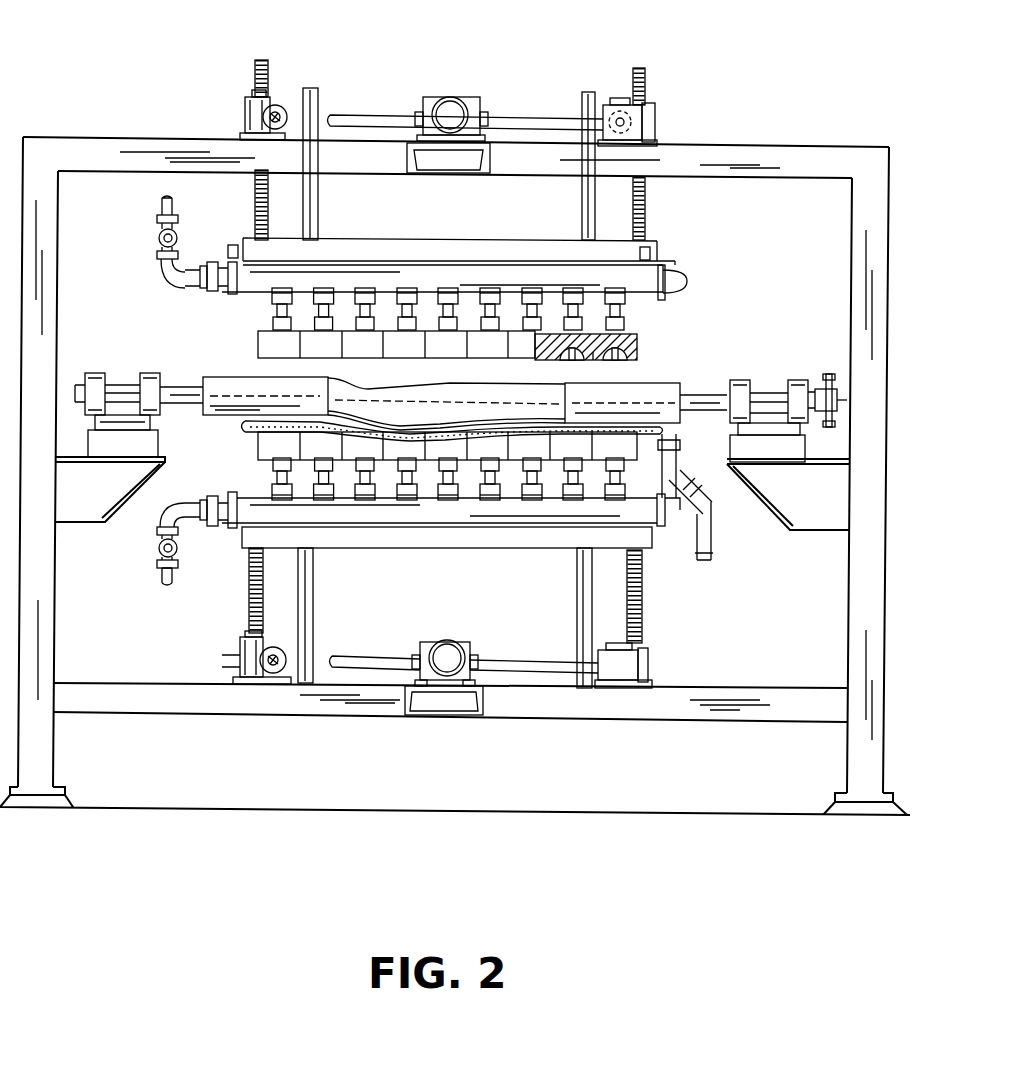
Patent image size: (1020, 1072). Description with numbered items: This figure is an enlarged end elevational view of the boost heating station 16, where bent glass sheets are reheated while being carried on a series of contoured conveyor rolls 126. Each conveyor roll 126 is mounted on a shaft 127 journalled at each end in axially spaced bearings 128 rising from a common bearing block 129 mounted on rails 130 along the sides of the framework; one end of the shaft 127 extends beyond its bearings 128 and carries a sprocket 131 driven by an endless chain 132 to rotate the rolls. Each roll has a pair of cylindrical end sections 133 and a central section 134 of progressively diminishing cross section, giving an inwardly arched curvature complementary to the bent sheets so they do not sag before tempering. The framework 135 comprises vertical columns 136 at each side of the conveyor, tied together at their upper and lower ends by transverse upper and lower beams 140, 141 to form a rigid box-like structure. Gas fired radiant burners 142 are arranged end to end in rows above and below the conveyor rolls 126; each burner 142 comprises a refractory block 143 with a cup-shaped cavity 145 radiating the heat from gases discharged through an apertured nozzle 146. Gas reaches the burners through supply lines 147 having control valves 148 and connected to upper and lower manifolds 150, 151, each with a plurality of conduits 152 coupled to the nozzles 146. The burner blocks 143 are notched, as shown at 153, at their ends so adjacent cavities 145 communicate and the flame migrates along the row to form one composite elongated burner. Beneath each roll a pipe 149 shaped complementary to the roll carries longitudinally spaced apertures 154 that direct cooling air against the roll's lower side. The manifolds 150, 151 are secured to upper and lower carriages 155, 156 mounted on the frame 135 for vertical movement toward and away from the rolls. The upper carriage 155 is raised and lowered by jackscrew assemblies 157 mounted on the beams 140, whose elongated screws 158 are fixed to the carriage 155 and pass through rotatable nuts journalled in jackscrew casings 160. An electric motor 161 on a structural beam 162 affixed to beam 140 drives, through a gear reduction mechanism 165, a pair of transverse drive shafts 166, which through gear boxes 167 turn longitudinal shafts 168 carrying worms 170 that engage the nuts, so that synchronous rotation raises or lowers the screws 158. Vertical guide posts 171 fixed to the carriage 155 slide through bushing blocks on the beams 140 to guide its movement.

The boost heating station 16 is at (738, 135).
The third conveyor rolls 126 is at (451, 381).
The shaft 127 is at (178, 392).
The bearings 128 is at (481, 424).
The bearing block 129 is at (125, 423).
The rails 130 is at (103, 491).
The sprocket 131 is at (838, 412).
The endless chain 132 is at (828, 374).
The cylindrical end sections 133 is at (233, 390).
The central section 134 is at (446, 394).
The framework 135 is at (455, 439).
The columns 136 is at (48, 594).
The upper beam 140 is at (128, 142).
The lower beam 141 is at (100, 703).
The gas fired radiant burners 142 is at (647, 333).
The burner block 143 is at (604, 377).
The cup-shaped cavity 145 is at (562, 360).
The apertured nozzle 146 is at (571, 360).
The supply lines 147 is at (160, 206).
The control valves 148 is at (135, 402).
The pipes 149 is at (243, 432).
The upper manifolds 150 is at (375, 272).
The lower manifolds 151 is at (335, 512).
The conduits 152 is at (428, 322).
The notch 153 is at (593, 360).
The apertures 154 is at (425, 420).
The upper carriage 155 is at (472, 252).
The lower carriage 156 is at (388, 548).
The jackscrew assemblies 157 is at (448, 361).
The screws 158 is at (698, 630).
The jackscrew casings 160 is at (246, 100).
The electric motor 161 is at (450, 110).
The structural beam 162 is at (407, 160).
The gear reduction mechanism 165 is at (468, 365).
The drive shafts 166 is at (380, 115).
The gear boxes 167 is at (655, 117).
The longitudinally extending shafts 168 is at (284, 112).
The worms 170 is at (264, 120).
The guide posts 171 is at (318, 205).